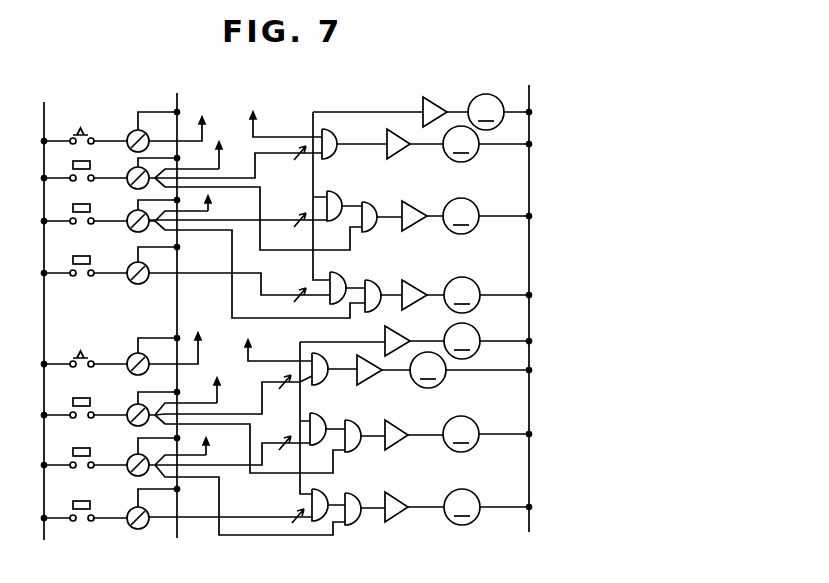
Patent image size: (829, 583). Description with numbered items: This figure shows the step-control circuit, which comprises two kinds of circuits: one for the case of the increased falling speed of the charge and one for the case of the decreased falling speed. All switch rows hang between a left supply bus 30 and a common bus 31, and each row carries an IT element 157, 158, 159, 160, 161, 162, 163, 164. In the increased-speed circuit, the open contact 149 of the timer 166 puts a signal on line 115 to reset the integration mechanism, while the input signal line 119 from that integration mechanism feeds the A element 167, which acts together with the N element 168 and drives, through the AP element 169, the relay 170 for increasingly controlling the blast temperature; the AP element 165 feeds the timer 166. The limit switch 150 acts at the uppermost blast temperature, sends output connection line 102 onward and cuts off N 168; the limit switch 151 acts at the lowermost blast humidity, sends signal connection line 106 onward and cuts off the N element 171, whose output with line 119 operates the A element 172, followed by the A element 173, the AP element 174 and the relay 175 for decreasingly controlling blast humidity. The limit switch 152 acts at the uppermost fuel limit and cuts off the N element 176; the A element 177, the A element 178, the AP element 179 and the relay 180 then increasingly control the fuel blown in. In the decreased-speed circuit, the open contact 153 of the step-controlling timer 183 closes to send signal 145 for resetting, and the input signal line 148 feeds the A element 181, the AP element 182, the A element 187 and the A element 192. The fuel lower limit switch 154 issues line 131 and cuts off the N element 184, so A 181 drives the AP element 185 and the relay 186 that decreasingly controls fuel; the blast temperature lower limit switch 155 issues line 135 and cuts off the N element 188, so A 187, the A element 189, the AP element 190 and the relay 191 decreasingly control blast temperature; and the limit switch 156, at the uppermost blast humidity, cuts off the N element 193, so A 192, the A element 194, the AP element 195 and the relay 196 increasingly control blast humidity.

The supply bus 30 is at (44, 102).
The common bus 31 is at (521, 77).
The open contact of the timer 149 is at (79, 127).
The limit switch 150 is at (69, 168).
The limit switch 151 is at (72, 209).
The limit switch 152 is at (71, 260).
The open contact of the step-controlling timer 153 is at (78, 351).
The fuel lower limit switch 154 is at (77, 401).
The blast temperature lower limit switch 155 is at (77, 448).
The limit switch 156 is at (76, 503).
The IT element 157 is at (127, 129).
The IT element 158 is at (126, 172).
The IT element 159 is at (127, 213).
The IT element 160 is at (126, 263).
The IT element 161 is at (128, 353).
The IT element 162 is at (130, 406).
The IT element 163 is at (128, 455).
The IT element 164 is at (128, 508).
The line 115 is at (193, 119).
The input signal line 119 is at (286, 117).
The output connection line 102 is at (221, 163).
The signal connection line 106 is at (228, 200).
The line 145 is at (195, 342).
The input signal line 148 is at (278, 341).
The output connection line 131 is at (234, 384).
The signal connection line 135 is at (226, 443).
The AP element 165 is at (436, 99).
The timer 166 is at (486, 112).
The A element 167 is at (333, 139).
The N element 168 is at (296, 165).
The AP element 169 is at (391, 156).
The relay 170 is at (461, 144).
The N element 171 is at (299, 227).
The A element 172 is at (333, 192).
The A element 173 is at (367, 201).
The AP element 174 is at (404, 228).
The relay 175 is at (461, 216).
The N element 176 is at (291, 284).
The A element 177 is at (333, 277).
The A element 178 is at (369, 280).
The AP element 179 is at (411, 287).
The relay 180 is at (462, 295).
The A element 181 is at (318, 362).
The AP element 182 is at (396, 338).
The timer 183 is at (462, 341).
The N element 184 is at (283, 394).
The AP element 185 is at (373, 382).
The relay 186 is at (428, 370).
The A element 187 is at (316, 417).
The N element 188 is at (283, 456).
The A element 189 is at (353, 416).
The AP element 190 is at (401, 426).
The relay 191 is at (461, 434).
The A element 192 is at (321, 496).
The N element 193 is at (283, 507).
The A element 194 is at (357, 497).
The AP element 195 is at (396, 496).
The relay 196 is at (462, 507).